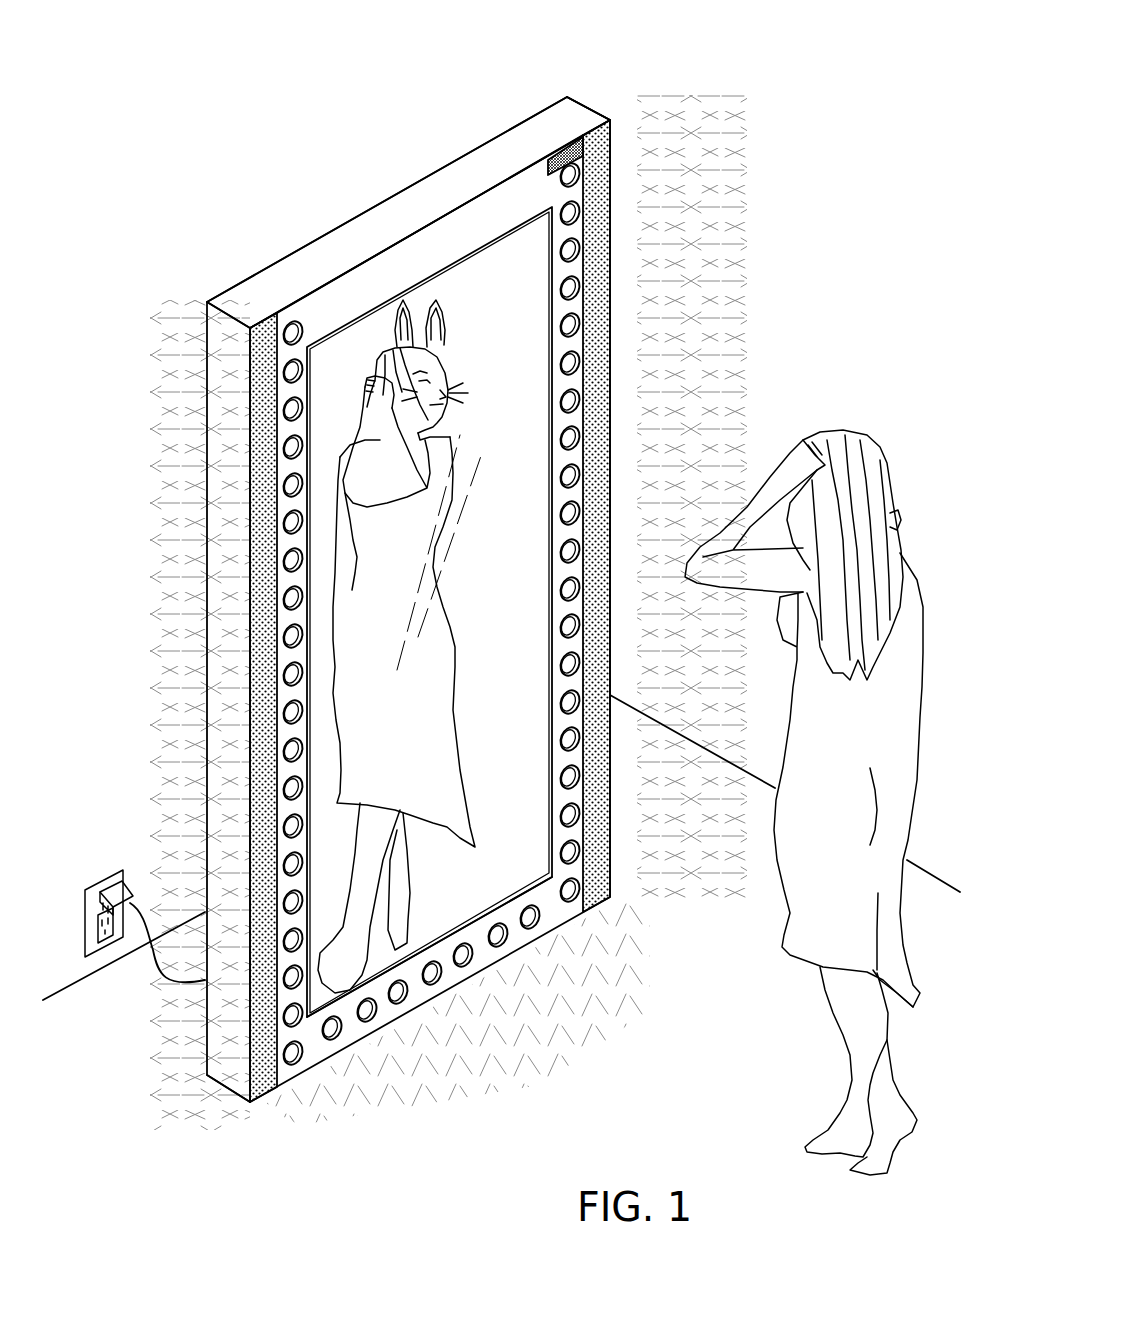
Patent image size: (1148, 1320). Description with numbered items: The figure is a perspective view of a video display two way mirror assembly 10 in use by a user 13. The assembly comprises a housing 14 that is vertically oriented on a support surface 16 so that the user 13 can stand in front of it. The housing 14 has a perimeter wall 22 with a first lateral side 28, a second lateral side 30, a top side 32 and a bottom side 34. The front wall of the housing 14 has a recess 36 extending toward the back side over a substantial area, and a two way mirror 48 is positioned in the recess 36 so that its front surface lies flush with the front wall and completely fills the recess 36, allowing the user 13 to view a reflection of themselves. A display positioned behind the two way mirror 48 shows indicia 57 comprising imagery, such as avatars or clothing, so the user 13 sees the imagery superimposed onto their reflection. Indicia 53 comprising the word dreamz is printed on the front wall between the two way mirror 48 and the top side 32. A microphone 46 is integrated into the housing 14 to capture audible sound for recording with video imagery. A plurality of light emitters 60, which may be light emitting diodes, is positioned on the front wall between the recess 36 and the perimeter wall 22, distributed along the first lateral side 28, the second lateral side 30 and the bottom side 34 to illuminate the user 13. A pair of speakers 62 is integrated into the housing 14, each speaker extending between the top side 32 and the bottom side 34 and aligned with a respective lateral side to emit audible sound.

The video display two way mirror assembly 10 is at (230, 89).
The user 13 is at (888, 418).
The housing 14 is at (207, 303).
The support surface 16 is at (78, 1020).
The perimeter wall 22 is at (260, 293).
The first lateral side 28 is at (220, 450).
The second lateral side 30 is at (590, 108).
The top side 32 is at (370, 223).
The bottom side 34 is at (232, 1095).
The recess 36 is at (551, 800).
The microphone 46 is at (612, 118).
The two way mirror 48 is at (472, 890).
The indicia 53 is at (515, 168).
The indicia 57 is at (376, 322).
The light emitters 60 is at (290, 605).
The speakers 62 is at (612, 214).